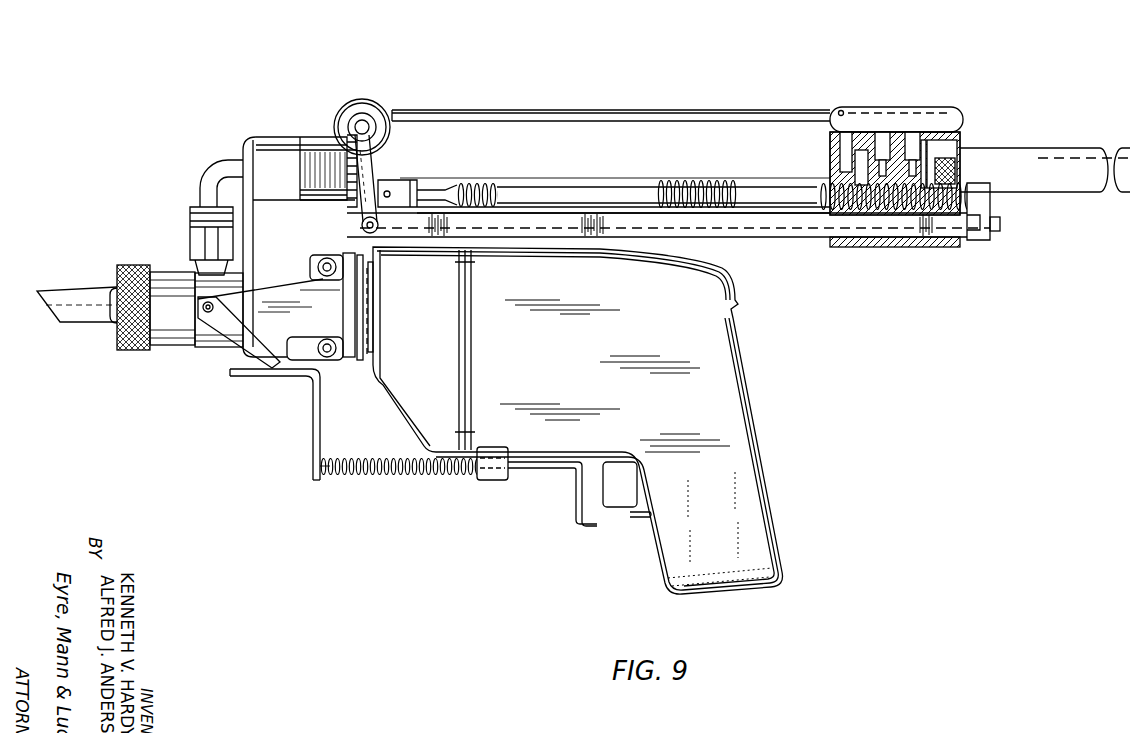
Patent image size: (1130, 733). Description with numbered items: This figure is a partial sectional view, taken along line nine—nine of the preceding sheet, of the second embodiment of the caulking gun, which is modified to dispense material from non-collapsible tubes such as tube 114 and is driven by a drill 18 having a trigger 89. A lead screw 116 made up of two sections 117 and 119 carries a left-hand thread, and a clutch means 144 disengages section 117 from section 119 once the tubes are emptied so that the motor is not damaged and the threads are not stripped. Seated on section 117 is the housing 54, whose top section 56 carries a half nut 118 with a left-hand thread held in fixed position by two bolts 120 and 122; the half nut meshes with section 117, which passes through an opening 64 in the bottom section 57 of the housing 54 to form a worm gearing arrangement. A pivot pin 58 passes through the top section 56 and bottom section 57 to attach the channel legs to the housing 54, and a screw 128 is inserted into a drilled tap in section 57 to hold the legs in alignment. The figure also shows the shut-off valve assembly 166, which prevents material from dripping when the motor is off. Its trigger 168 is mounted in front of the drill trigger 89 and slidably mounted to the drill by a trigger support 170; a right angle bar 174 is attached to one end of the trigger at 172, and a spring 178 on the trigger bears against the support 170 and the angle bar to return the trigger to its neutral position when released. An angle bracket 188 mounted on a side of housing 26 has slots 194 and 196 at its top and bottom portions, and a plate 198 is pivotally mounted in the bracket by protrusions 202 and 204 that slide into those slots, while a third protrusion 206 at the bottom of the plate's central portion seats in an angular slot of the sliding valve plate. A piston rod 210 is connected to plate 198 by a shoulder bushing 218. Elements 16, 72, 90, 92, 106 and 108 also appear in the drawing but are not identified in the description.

The housing 16 is at (760, 387).
The drill 18 is at (755, 500).
The housing 26 is at (312, 344).
The housing 54 is at (970, 103).
The top section 56 is at (958, 138).
The bottom section 57 is at (897, 247).
The pivot pin 58 is at (962, 168).
The opening 64 is at (966, 240).
The hose 72 is at (218, 178).
The trigger 89 is at (627, 497).
The actuating rod 90 is at (771, 232).
The nozzle fitting 92 is at (148, 251).
The cap 106 is at (946, 107).
The passage 108 is at (845, 157).
The non-collapsible tube 114 is at (732, 126).
The lead screw 116 is at (655, 180).
The lead screw section 117 is at (732, 184).
The half nut 118 is at (866, 163).
The lead screw section 119 is at (350, 217).
The bolt 120 is at (882, 131).
The bolt 122 is at (912, 131).
The screw 128 is at (832, 214).
The clutch means 144 is at (390, 96).
The shut-off valve assembly 166 is at (408, 482).
The trigger 168 is at (575, 511).
The trigger support 170 is at (493, 481).
The trigger end attachment point 172 is at (314, 476).
The right angle bar 174 is at (313, 432).
The spring 178 is at (367, 461).
The angle bracket 188 is at (368, 311).
The slot 194 is at (380, 262).
The slot 196 is at (373, 352).
The plate 198 is at (268, 300).
The protrusion 202 is at (360, 256).
The protrusion 204 is at (364, 360).
The third protrusion 206 is at (277, 375).
The piston rod 210 is at (201, 313).
The shoulder bushing 218 is at (213, 328).